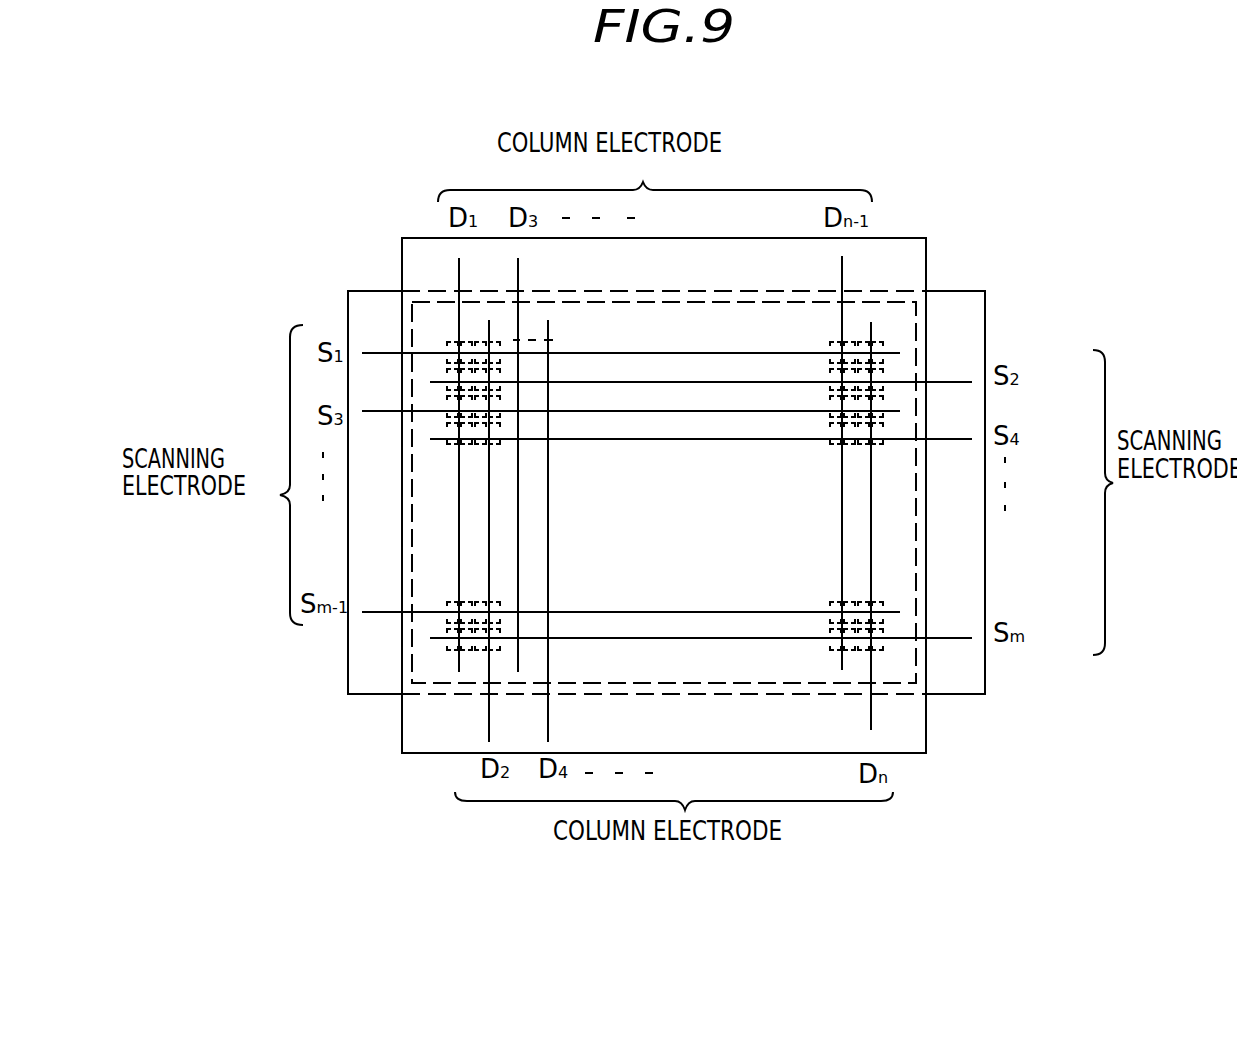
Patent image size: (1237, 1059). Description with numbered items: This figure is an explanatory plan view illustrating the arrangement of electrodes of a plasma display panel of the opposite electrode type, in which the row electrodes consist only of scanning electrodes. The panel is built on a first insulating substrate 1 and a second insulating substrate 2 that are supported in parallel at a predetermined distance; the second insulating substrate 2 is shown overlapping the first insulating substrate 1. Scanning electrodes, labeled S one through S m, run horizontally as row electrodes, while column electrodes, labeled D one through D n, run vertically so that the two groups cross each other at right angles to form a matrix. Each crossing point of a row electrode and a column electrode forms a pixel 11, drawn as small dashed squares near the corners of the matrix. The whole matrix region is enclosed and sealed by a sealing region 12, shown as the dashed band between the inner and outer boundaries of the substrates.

The first insulating substrate 1 is at (957, 290).
The second insulating substrate 2 is at (888, 238).
The pixel 11 is at (880, 600).
The sealing region 12 is at (922, 672).